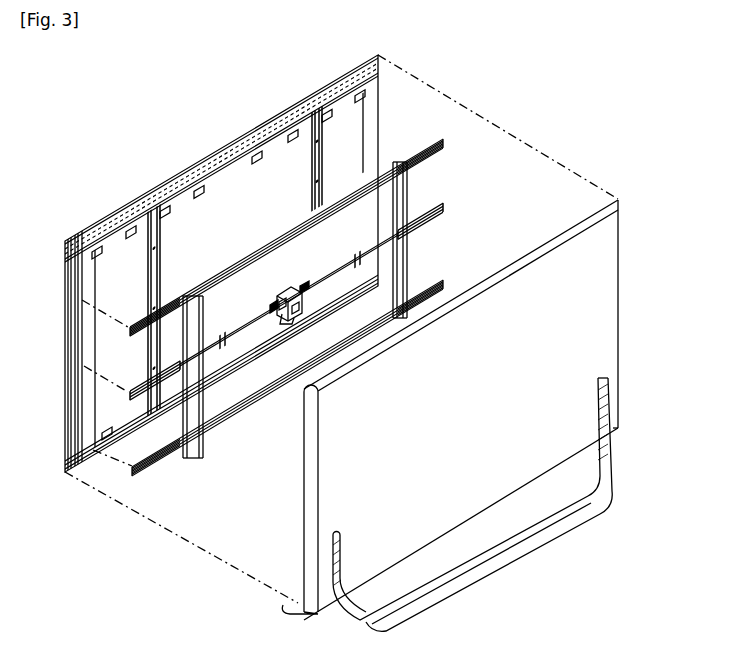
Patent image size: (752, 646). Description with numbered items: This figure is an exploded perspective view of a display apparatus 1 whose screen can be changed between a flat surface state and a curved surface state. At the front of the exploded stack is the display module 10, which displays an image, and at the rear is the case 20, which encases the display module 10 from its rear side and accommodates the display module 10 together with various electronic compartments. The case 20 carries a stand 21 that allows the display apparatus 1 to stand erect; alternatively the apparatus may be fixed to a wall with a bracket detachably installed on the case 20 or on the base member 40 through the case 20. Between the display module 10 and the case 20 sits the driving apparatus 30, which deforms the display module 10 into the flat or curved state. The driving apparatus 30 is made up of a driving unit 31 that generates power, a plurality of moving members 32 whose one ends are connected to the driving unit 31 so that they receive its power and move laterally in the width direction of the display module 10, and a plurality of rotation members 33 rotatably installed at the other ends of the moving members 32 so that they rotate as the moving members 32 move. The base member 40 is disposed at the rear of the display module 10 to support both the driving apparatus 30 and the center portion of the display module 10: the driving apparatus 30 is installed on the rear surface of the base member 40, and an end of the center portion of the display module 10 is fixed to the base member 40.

The display apparatus 1 is at (486, 57).
The display module 10 is at (208, 148).
The case 20 is at (585, 203).
The stand 21 is at (489, 579).
The driving apparatus 30 is at (463, 209).
The driving unit 31 is at (281, 282).
The moving members 32 is at (320, 300).
The rotation members 33 is at (441, 206).
The base member 40 is at (388, 164).